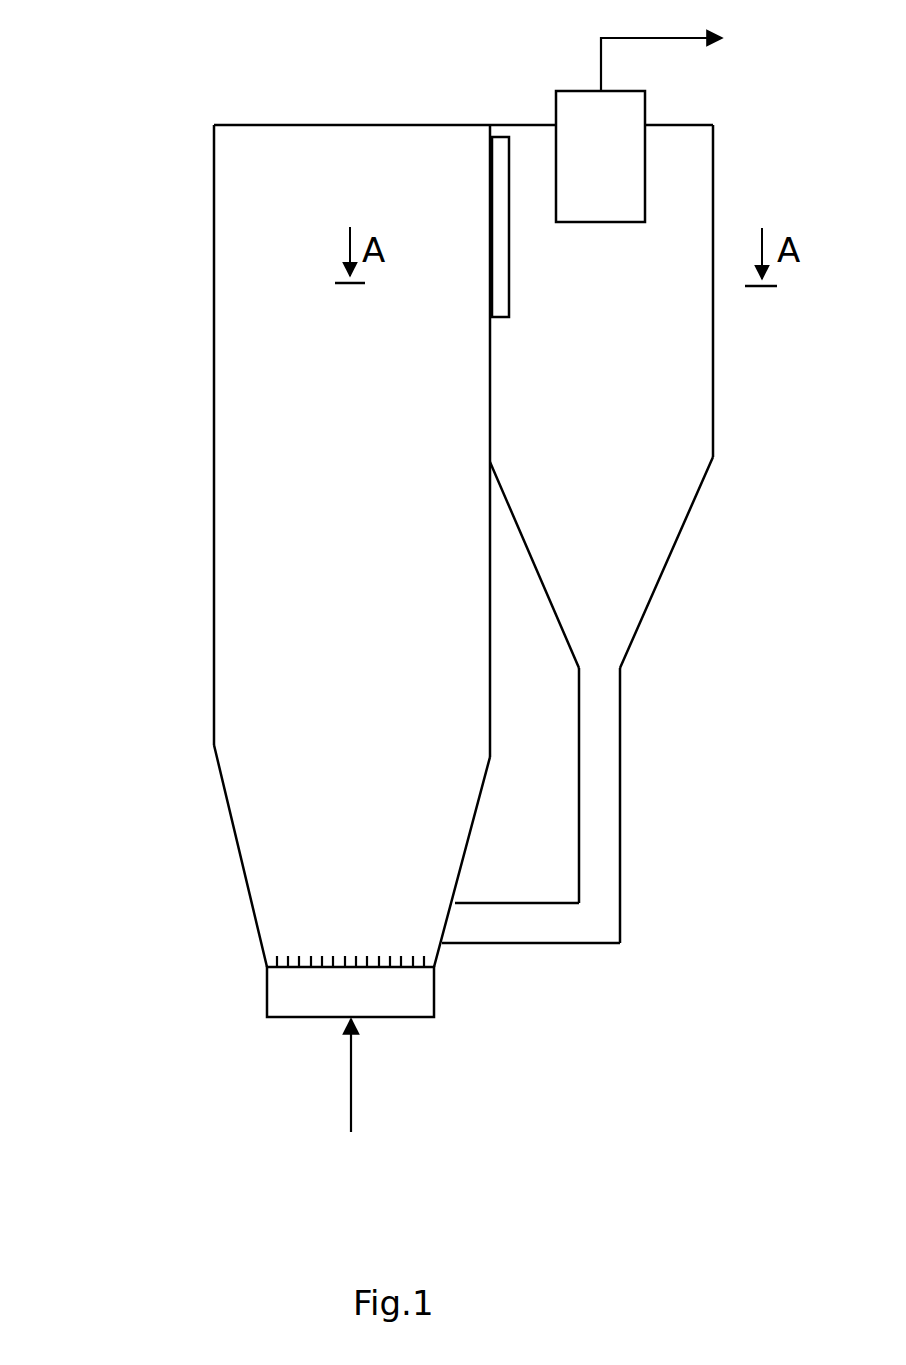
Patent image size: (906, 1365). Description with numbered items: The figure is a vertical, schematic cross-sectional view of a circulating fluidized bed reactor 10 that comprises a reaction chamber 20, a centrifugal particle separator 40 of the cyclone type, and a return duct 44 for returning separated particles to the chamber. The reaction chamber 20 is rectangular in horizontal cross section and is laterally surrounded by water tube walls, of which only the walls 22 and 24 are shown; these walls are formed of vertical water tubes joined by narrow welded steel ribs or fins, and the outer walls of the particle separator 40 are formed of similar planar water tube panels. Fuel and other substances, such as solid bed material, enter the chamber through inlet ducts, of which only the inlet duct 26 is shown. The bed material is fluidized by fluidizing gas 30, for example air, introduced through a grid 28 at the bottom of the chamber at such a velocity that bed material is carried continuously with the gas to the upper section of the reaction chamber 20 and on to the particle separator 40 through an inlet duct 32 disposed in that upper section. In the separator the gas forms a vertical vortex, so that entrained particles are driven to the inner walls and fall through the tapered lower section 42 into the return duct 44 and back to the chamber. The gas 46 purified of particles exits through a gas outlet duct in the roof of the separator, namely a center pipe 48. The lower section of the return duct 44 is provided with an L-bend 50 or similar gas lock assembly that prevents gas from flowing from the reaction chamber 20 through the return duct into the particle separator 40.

The circulating fluidized bed reactor 10 is at (195, 166).
The reaction chamber 20 is at (375, 421).
The water tube wall 22 is at (214, 547).
The water tube wall 24 is at (490, 580).
The inlet duct 26 is at (232, 830).
The grid 28 is at (361, 962).
The fluidizing gas 30 is at (379, 1075).
The inlet duct 32 is at (503, 208).
The centrifugal particle separator 40 is at (625, 351).
The tapered lower section 42 is at (648, 560).
The return duct 44 is at (603, 810).
The gas 46 is at (661, 45).
The center pipe 48 is at (630, 180).
The L-bend 50 is at (525, 925).